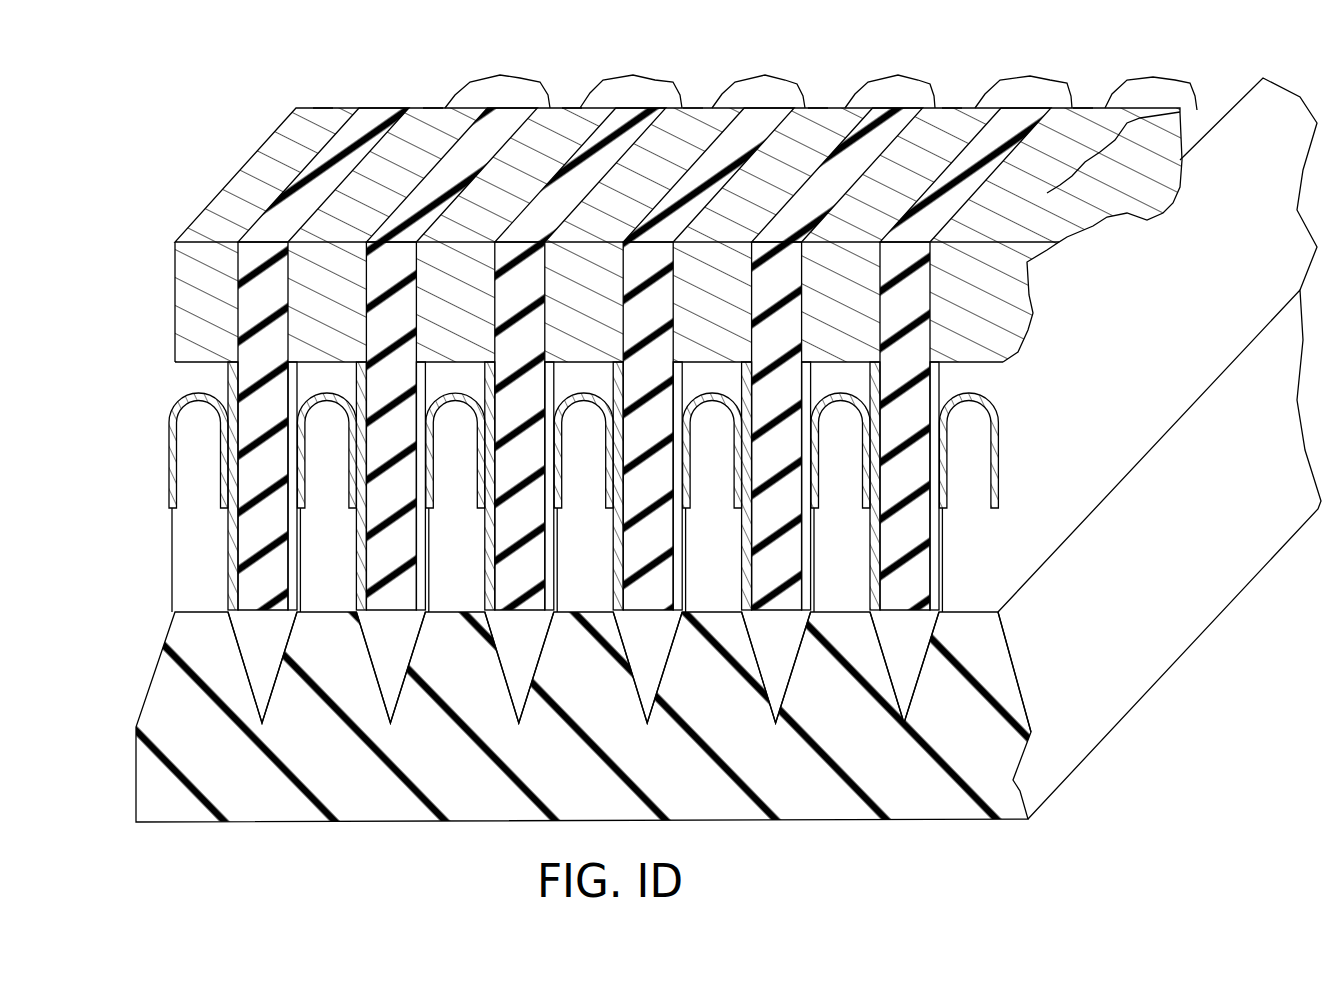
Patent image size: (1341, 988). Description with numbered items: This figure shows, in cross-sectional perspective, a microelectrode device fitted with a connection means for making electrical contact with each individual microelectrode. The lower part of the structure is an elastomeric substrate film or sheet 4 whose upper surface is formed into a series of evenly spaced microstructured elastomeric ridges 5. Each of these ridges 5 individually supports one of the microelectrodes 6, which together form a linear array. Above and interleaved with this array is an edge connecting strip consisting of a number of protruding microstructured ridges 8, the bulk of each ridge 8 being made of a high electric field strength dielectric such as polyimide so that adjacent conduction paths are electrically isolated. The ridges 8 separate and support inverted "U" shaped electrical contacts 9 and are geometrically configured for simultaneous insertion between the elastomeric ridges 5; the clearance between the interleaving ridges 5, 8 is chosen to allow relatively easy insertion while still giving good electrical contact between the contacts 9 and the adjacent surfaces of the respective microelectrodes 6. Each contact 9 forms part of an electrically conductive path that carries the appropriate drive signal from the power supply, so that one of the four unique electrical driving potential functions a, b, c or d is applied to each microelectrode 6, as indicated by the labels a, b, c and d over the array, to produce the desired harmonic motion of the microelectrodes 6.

The elastomeric substrate film or sheet 4 is at (1012, 758).
The microstructured elastomeric ridges 5 is at (172, 605).
The microelectrodes 6 is at (150, 460).
The protruding microstructured ridges 8 is at (945, 376).
The inverted "U" shaped electrical contacts 9 is at (212, 384).
The electrical driving potential function a is at (433, 88).
The electrical driving potential function b is at (572, 88).
The electrical driving potential function c is at (693, 88).
The electrical driving potential function d is at (324, 88).